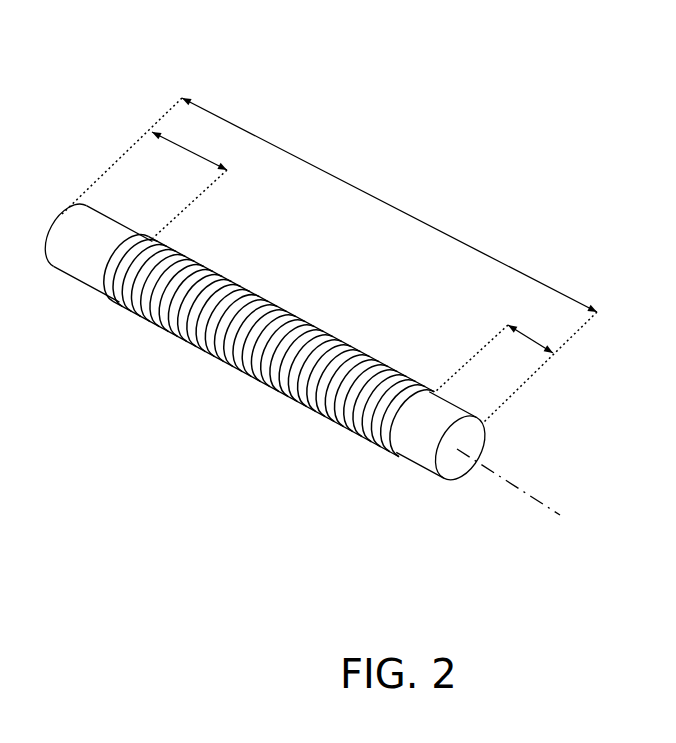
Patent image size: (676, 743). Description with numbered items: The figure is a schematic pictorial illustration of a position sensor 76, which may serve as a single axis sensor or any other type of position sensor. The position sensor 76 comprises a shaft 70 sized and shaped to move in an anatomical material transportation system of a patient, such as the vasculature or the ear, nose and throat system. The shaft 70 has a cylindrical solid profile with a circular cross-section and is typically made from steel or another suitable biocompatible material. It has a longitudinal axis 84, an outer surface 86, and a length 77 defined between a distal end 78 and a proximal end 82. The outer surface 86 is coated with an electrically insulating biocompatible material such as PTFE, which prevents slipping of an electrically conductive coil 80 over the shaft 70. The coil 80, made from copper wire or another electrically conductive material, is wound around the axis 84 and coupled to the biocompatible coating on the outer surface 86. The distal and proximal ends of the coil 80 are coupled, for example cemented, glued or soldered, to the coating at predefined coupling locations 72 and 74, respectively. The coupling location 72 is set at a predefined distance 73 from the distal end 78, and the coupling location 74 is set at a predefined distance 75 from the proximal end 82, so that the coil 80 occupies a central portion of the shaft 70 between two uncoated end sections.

The shaft 70 is at (63, 266).
The coupling location 72 is at (402, 373).
The predefined distance 73 is at (501, 348).
The coupling location 74 is at (125, 292).
The predefined distance 75 is at (189, 177).
The position sensor 76 is at (342, 52).
The length 77 is at (403, 209).
The distal end 78 is at (447, 467).
The electrically conductive coil 80 is at (303, 323).
The proximal end 82 is at (50, 230).
The longitudinal axis 84 is at (560, 518).
The outer surface 86 is at (417, 425).